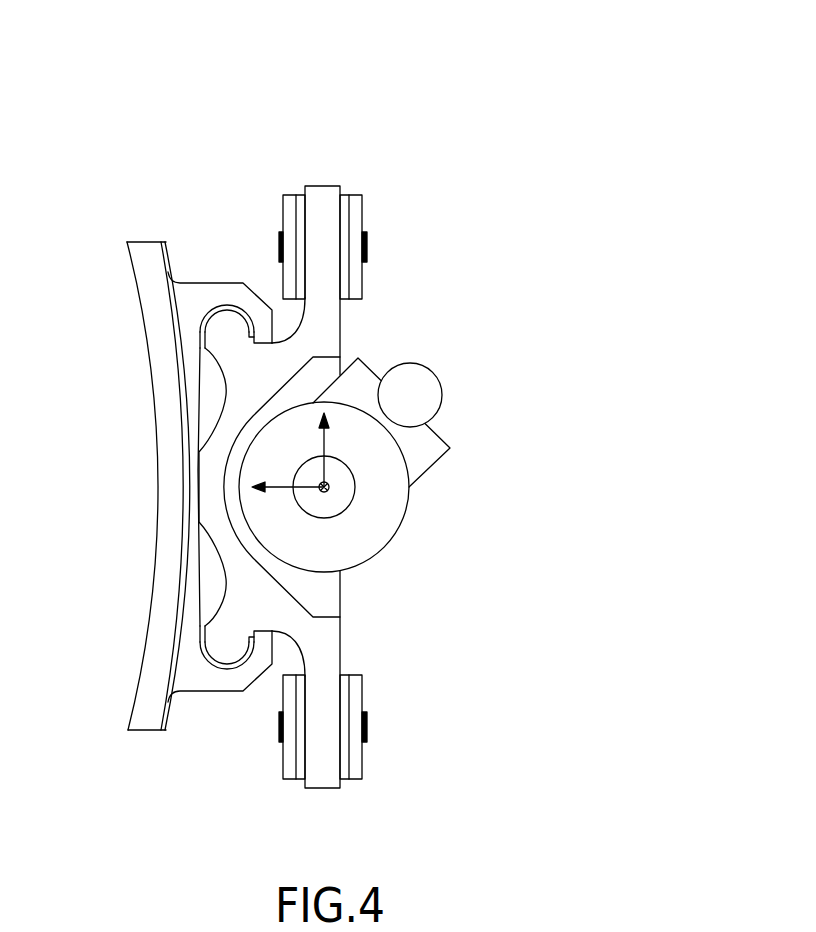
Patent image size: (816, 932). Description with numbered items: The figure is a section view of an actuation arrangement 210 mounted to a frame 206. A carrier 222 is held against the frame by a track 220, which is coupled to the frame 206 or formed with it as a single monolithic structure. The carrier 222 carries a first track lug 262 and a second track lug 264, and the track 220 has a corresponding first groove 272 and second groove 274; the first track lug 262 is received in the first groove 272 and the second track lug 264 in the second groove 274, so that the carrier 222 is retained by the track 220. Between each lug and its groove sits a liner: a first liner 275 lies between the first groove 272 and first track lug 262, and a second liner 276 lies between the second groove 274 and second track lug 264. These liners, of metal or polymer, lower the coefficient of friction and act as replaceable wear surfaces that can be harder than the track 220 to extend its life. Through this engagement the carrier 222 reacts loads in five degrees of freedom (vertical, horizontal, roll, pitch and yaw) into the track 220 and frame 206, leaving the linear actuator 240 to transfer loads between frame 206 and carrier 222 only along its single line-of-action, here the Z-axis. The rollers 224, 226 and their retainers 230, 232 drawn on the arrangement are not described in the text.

The actuation arrangement 210 is at (235, 82).
The frame 206 is at (158, 377).
The track 220 is at (220, 283).
The carrier 222 is at (210, 494).
The upper roller pair 224 is at (360, 195).
The lower roller pair 226 is at (355, 780).
The upper roller retainer 230 is at (367, 247).
The lower roller retainer 232 is at (368, 725).
The linear actuator 240 is at (394, 537).
The first track lug 262 is at (220, 328).
The second track lug 264 is at (220, 641).
The first groove 272 is at (212, 306).
The second groove 274 is at (203, 667).
The first liner 275 is at (238, 307).
The second liner 276 is at (233, 667).